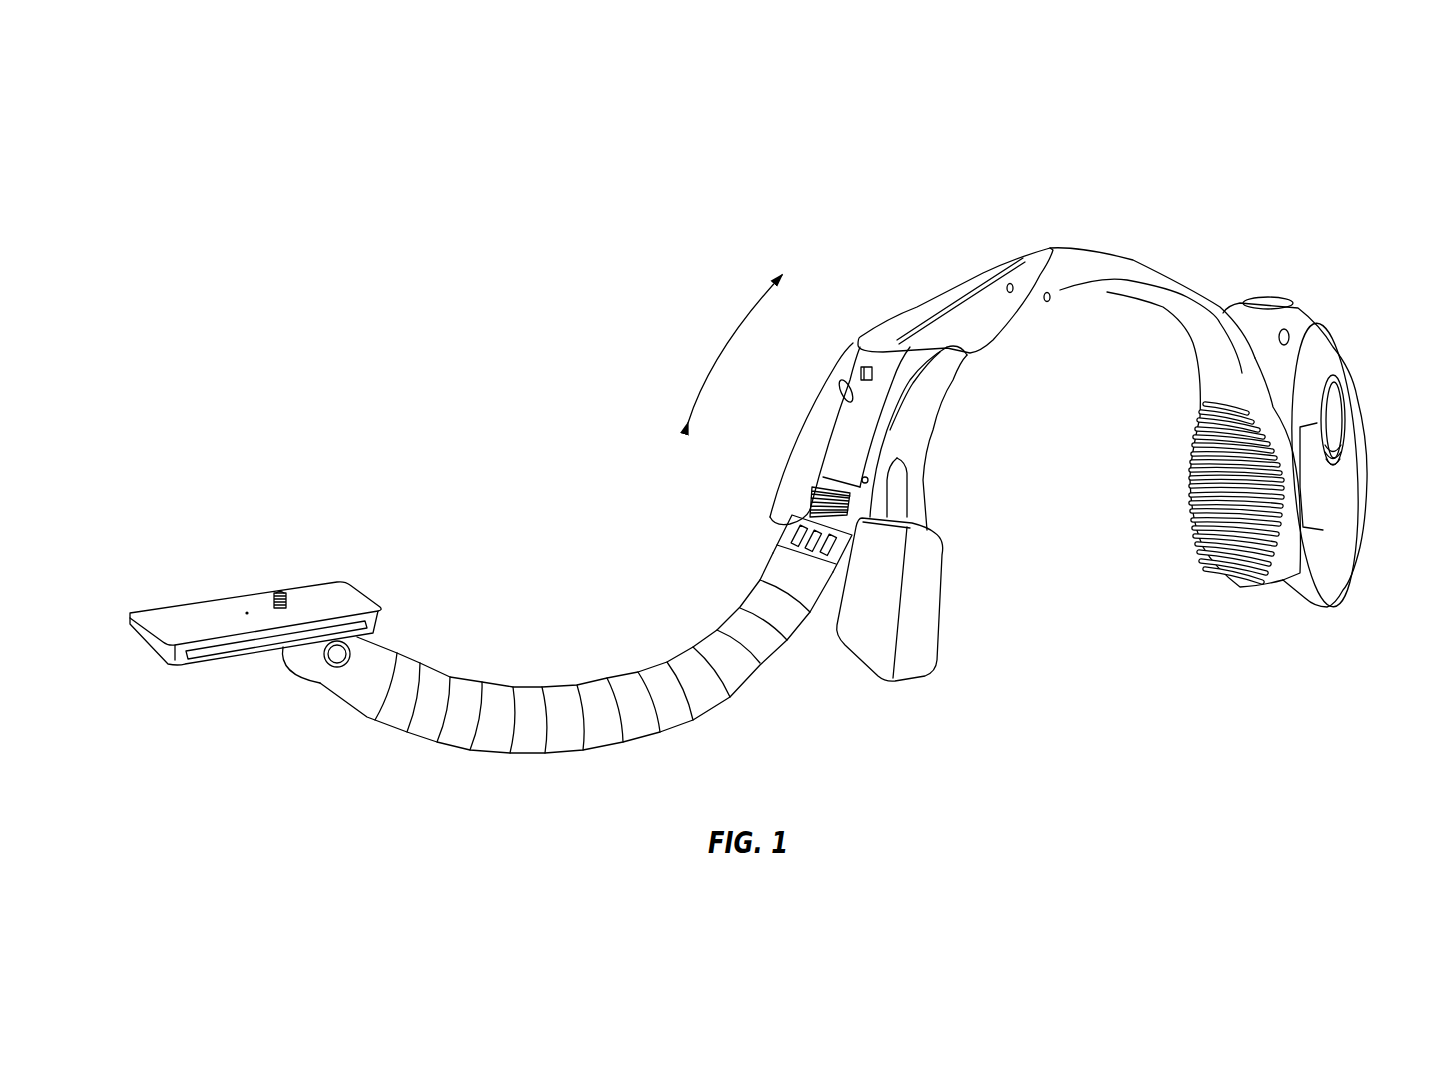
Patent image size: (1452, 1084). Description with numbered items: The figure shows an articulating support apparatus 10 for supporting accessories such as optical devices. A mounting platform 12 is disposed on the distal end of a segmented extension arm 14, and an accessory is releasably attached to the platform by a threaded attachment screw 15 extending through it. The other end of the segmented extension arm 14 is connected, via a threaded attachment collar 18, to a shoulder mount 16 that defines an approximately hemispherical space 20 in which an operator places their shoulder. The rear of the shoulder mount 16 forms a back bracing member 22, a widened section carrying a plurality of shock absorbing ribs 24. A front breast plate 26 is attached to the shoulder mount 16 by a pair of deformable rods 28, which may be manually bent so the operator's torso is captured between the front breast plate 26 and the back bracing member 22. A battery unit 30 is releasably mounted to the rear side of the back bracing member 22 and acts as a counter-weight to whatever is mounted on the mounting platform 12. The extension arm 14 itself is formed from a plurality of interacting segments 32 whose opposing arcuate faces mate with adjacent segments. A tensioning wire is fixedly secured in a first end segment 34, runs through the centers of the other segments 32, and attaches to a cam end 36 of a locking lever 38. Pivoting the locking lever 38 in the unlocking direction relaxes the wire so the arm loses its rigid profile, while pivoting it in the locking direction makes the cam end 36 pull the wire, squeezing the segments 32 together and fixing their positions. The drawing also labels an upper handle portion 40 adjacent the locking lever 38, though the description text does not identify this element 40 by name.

The articulating support apparatus 10 is at (560, 410).
The mounting platform 12 is at (168, 613).
The segmented extension arm 14 is at (576, 688).
The threaded attachment screw 15 is at (282, 596).
The shoulder mount 16 is at (1043, 421).
The threaded attachment collar 18 is at (780, 542).
The hemispherical space 20 is at (1070, 467).
The back bracing member 22 is at (1198, 470).
The shock absorbing ribs 24 is at (1197, 530).
The front breast plate 26 is at (930, 608).
The deformable rods 28 is at (920, 467).
The battery unit 30 is at (1345, 340).
The segments 32 is at (492, 687).
The first end segment 34 is at (312, 670).
The cam end 36 is at (860, 373).
The locking lever 38 is at (805, 468).
The upper handle 40 is at (882, 335).